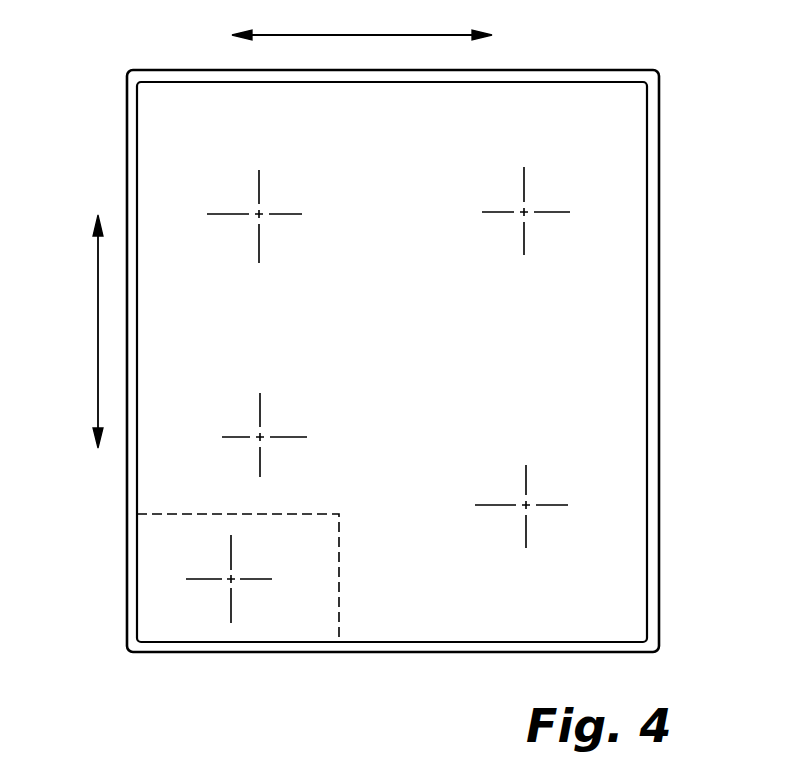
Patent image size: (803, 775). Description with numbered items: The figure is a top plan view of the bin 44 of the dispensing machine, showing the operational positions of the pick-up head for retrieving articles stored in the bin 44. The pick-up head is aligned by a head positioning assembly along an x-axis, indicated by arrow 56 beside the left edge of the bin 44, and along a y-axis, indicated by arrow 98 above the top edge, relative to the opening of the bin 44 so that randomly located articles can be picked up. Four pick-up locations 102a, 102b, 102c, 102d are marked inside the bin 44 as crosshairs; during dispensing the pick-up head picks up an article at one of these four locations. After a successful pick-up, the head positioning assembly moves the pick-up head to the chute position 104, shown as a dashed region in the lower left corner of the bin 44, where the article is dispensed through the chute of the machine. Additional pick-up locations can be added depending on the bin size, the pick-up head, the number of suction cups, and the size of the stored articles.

The bin 44 is at (663, 172).
The arrow 98 is at (322, 35).
The arrow 56 is at (98, 345).
The pick-up location 102a is at (270, 203).
The pick-up location 102b is at (530, 202).
The pick-up location 102c is at (527, 498).
The pick-up location 102d is at (262, 436).
The chute position 104 is at (287, 535).